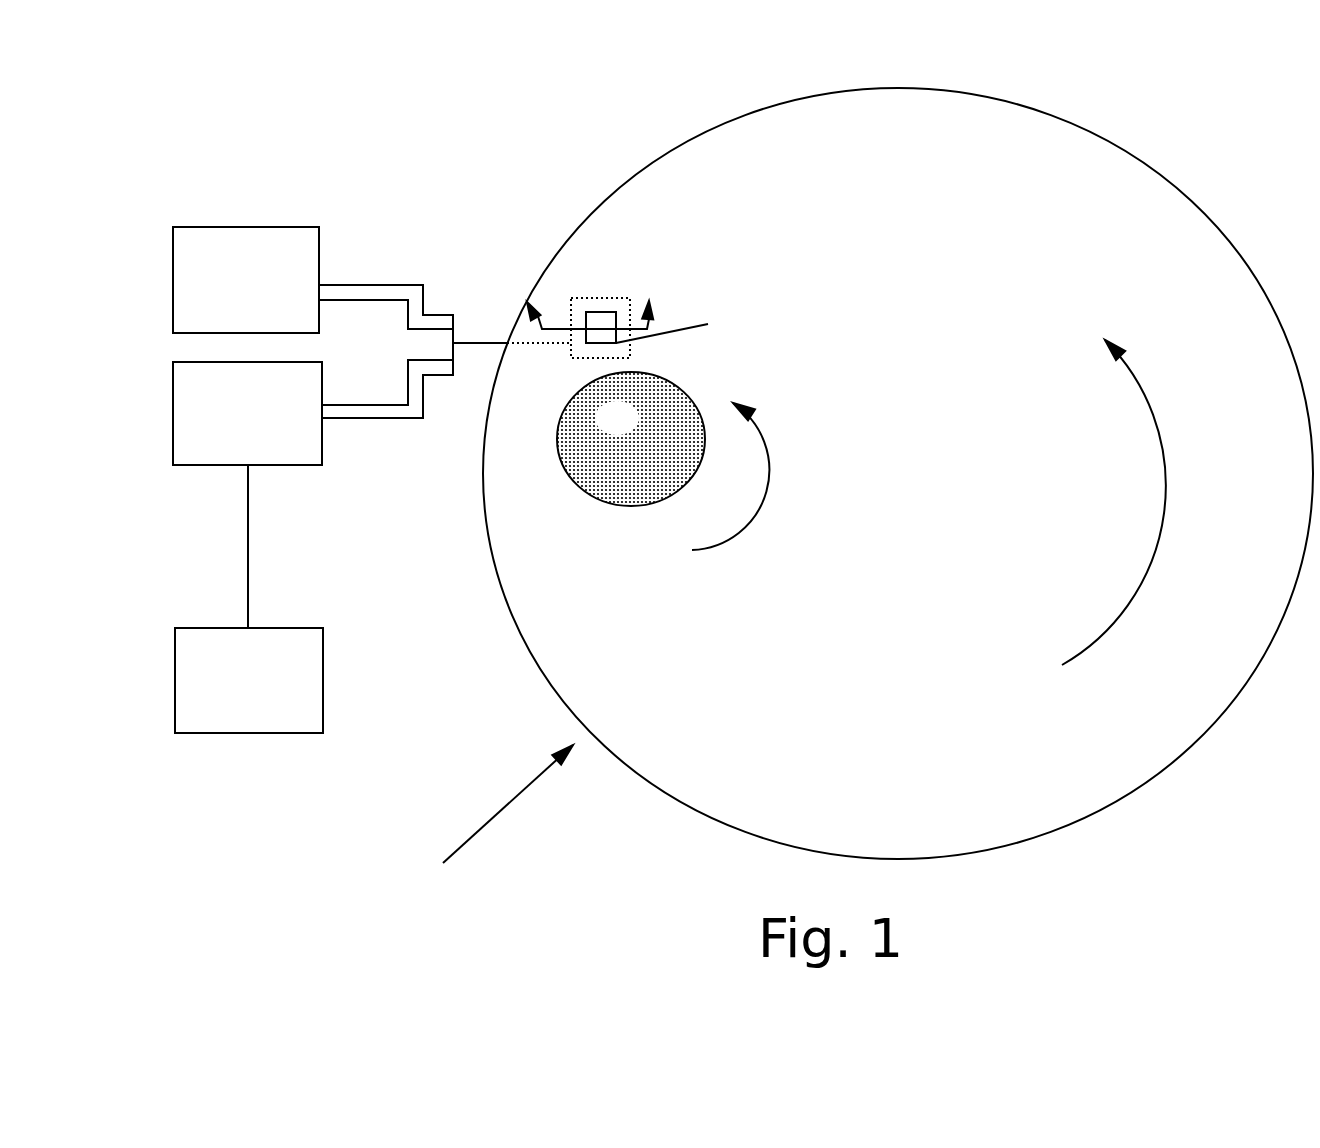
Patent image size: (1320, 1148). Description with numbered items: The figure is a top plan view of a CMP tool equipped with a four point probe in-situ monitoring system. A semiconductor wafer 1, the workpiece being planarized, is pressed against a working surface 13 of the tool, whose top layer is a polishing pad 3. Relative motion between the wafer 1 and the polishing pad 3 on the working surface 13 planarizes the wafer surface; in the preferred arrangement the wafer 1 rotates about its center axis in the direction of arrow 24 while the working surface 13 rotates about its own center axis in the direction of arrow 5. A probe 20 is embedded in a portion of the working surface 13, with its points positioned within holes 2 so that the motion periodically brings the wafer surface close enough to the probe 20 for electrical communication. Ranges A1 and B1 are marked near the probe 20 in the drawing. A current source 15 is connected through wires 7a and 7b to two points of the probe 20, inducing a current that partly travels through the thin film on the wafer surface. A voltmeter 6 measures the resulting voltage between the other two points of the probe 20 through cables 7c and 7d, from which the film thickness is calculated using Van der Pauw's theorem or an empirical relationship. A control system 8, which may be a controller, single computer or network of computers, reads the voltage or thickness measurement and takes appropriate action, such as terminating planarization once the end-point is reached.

The semiconductor wafer 1 is at (616, 462).
The holes 2 is at (599, 327).
The polishing pad 3 is at (721, 649).
The arrow indicating rotation of working surface 5 is at (1144, 502).
The voltmeter 6 is at (237, 448).
The wire 7a is at (333, 285).
The wire 7b is at (348, 300).
The cable 7c is at (333, 418).
The cable 7d is at (348, 405).
The control system 8 is at (268, 717).
The working surface 13 is at (464, 844).
The current source 15 is at (277, 300).
The probe 20 is at (587, 328).
The arrow indicating rotation of wafer 24 is at (767, 476).
The scan range A1 is at (602, 283).
The scan range B1 is at (695, 318).